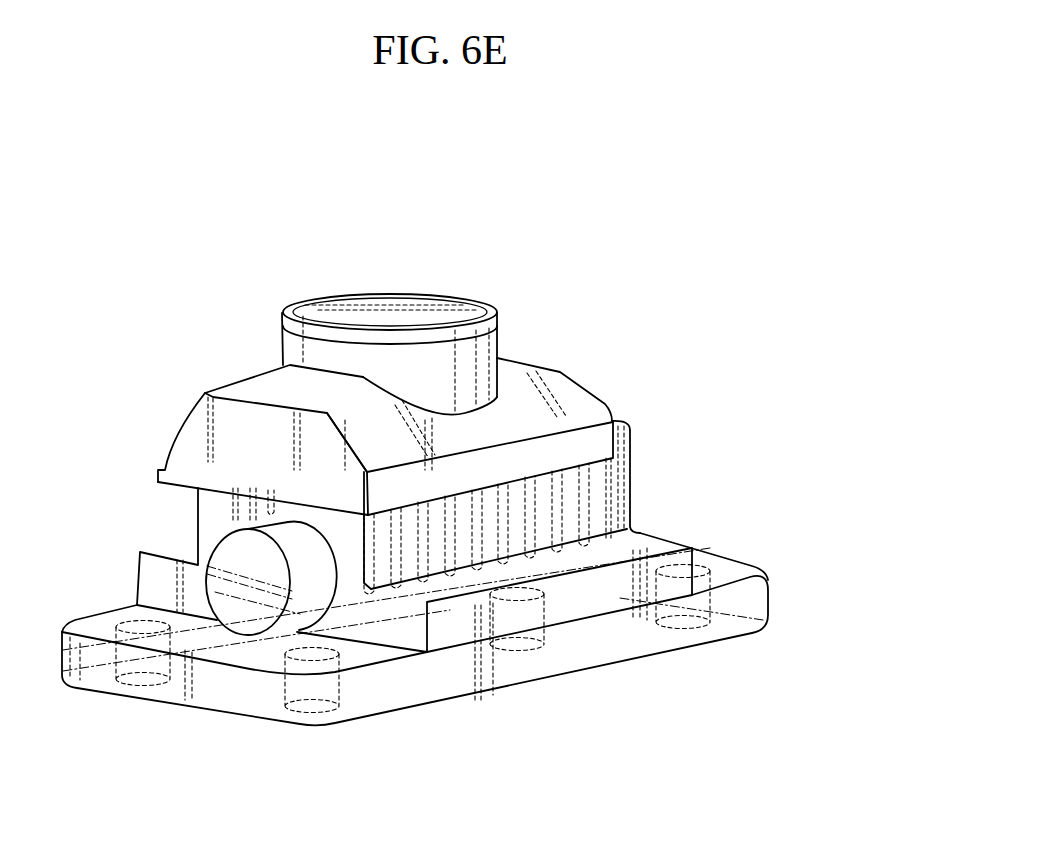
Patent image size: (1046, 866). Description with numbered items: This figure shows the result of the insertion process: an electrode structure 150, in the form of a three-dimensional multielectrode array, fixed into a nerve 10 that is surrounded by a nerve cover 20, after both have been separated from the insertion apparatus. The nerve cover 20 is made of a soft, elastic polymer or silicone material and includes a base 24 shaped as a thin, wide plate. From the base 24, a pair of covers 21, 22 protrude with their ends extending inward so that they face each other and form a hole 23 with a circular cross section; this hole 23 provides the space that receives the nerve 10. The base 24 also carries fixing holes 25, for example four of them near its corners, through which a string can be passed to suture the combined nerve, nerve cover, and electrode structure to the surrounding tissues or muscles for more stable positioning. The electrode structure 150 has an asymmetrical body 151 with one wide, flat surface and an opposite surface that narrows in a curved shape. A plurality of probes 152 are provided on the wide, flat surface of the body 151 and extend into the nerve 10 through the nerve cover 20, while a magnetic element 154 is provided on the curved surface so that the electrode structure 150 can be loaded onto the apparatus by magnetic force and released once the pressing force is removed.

The nerve 10 is at (213, 592).
The nerve cover 20 is at (783, 540).
The cover 21 is at (217, 514).
The cover 22 is at (372, 547).
The hole 23 is at (308, 630).
The base 24 is at (403, 700).
The fixing hole 25 is at (143, 683).
The electrode structure 150 is at (600, 342).
The body 151 is at (232, 391).
The probe 152 is at (536, 512).
The magnetic element 154 is at (408, 296).